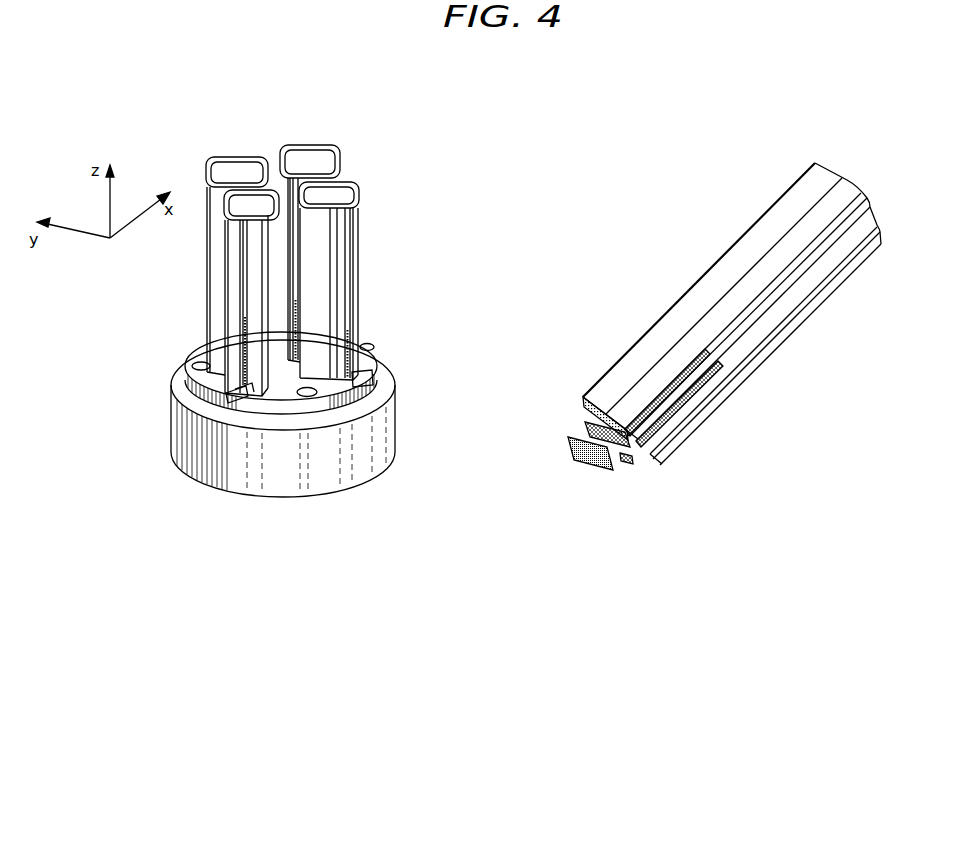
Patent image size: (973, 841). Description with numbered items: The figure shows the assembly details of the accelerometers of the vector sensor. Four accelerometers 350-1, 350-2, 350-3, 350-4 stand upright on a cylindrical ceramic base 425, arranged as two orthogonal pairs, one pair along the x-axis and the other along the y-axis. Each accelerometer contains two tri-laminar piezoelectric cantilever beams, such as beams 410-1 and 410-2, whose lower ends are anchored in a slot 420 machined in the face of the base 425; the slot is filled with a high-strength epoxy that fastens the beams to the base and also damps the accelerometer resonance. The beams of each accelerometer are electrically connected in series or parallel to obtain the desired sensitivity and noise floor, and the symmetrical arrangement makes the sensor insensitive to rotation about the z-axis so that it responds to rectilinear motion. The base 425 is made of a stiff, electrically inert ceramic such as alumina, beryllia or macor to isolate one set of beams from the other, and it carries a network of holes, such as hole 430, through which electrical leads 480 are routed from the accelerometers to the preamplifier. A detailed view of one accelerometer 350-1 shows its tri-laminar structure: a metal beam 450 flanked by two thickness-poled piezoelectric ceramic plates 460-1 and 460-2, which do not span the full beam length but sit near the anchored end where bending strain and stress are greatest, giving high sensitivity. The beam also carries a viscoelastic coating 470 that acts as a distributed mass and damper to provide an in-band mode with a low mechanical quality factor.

The accelerometer 350-1 is at (235, 160).
The accelerometer 350-2 is at (305, 291).
The accelerometer 350-3 is at (350, 247).
The accelerometer 350-4 is at (300, 168).
The tri-laminar piezoelectric cantilever beam 410-1 is at (240, 349).
The tri-laminar piezoelectric cantilever beam 410-2 is at (406, 293).
The slot 420 is at (232, 405).
The base 425 is at (172, 420).
The hole 430 is at (308, 407).
The metal beam 450 is at (603, 470).
The thickness-poled piezoelectric ceramic plate 460-1 is at (583, 428).
The thickness-poled piezoelectric ceramic plate 460-2 is at (627, 460).
The viscoelastic coating 470 is at (810, 293).
The electrical leads 480 is at (590, 412).